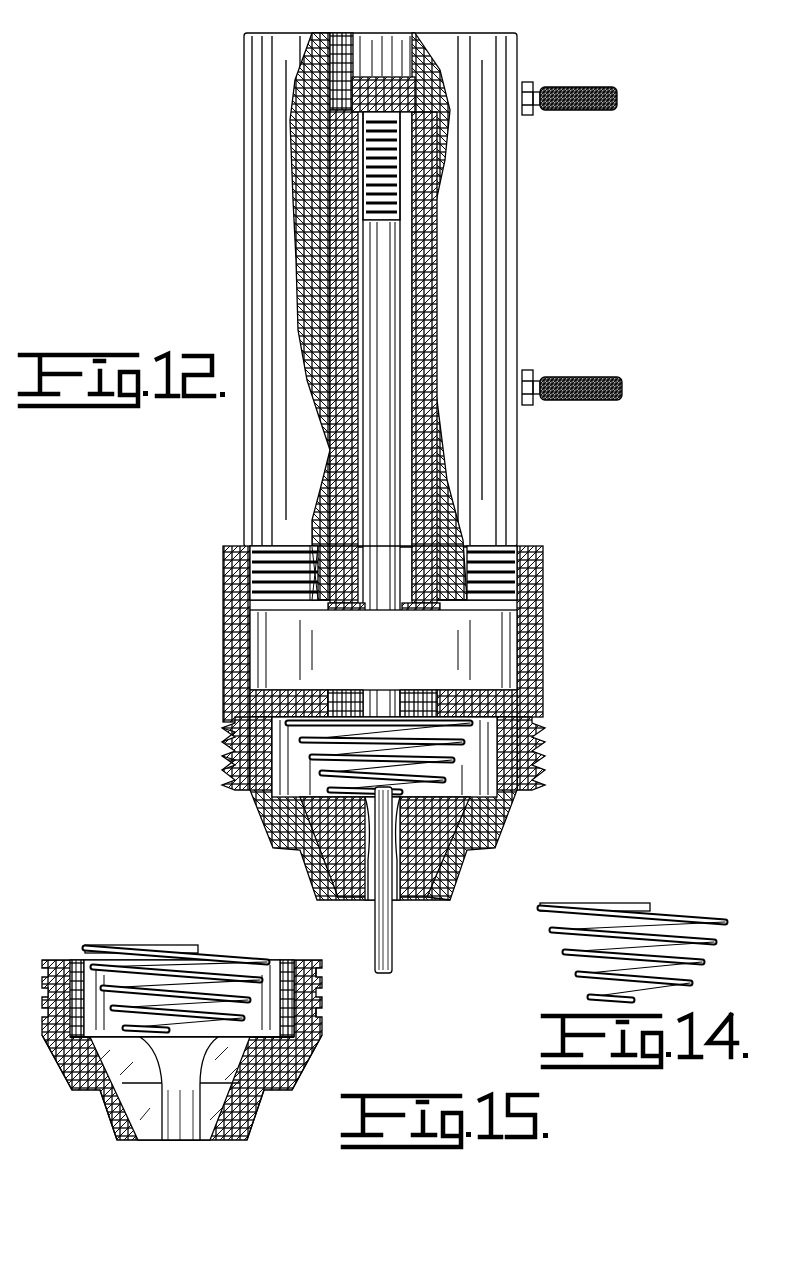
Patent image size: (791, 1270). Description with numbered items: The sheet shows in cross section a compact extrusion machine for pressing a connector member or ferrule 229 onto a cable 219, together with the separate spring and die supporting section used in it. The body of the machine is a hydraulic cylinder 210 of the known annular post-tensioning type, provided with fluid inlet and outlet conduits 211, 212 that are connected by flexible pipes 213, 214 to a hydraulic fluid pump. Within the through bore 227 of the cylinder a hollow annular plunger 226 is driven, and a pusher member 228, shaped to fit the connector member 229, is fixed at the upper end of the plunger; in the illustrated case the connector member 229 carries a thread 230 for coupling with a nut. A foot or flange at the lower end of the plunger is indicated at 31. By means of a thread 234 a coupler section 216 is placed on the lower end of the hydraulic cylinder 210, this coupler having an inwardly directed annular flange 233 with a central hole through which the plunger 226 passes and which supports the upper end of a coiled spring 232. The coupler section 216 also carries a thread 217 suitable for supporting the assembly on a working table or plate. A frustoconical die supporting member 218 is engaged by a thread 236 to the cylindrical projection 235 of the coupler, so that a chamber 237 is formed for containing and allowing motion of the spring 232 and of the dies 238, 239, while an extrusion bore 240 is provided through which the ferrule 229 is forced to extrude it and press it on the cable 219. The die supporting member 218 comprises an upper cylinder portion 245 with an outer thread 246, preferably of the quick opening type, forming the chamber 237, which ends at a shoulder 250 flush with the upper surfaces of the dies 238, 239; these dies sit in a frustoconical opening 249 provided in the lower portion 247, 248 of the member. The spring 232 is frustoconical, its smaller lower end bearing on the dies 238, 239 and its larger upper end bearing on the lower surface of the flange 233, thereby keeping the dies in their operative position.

In FIG. 12, the hydraulic cylinder 210 is at (238, 212).
In FIG. 12, the fluid inlet conduit 211 is at (540, 88).
In FIG. 12, the fluid outlet conduit 212 is at (540, 378).
In FIG. 12, the flexible pipe 213 is at (580, 111).
In FIG. 12, the flexible pipe 214 is at (597, 401).
In FIG. 12, the coupler section 216 is at (222, 614).
In FIG. 12, the thread 217 is at (222, 777).
In FIG. 12, the die supporting member 218 is at (300, 868).
In FIG. 15, the die supporting member 218 is at (72, 960).
In FIG. 12, the cable 219 is at (393, 947).
In FIG. 12, the hollow annular plunger 226 is at (423, 182).
In FIG. 12, the through bore 227 is at (358, 53).
In FIG. 12, the pusher member 228 is at (380, 87).
In FIG. 12, the connector member 229 is at (390, 264).
In FIG. 12, the thread 230 is at (395, 208).
In FIG. 12, the sleeve foot flange 31 is at (410, 612).
In FIG. 12, the coiled spring 232 is at (410, 706).
In FIG. 14, the coiled spring 232 is at (672, 916).
In FIG. 15, the coiled spring 232 is at (122, 950).
In FIG. 12, the annular flange 233 is at (480, 706).
In FIG. 12, the thread 234 is at (250, 560).
In FIG. 12, the cylindrical projection 235 is at (222, 735).
In FIG. 12, the thread 236 is at (222, 757).
In FIG. 12, the chamber 237 is at (293, 783).
In FIG. 15, the chamber 237 is at (276, 985).
In FIG. 12, the die 238 is at (328, 822).
In FIG. 15, the die 238 is at (130, 1060).
In FIG. 12, the die 239 is at (408, 903).
In FIG. 12, the extrusion bore 240 is at (363, 888).
In FIG. 15, the extrusion bore 240 is at (180, 1115).
In FIG. 15, the upper cylinder portion 245 is at (318, 970).
In FIG. 15, the outer thread 246 is at (324, 996).
In FIG. 15, the portion of the die supporting member 247 is at (284, 1062).
In FIG. 15, the portion of the die supporting member 248 is at (242, 1116).
In FIG. 15, the frustoconical opening 249 is at (135, 1107).
In FIG. 15, the shoulder 250 is at (75, 1031).